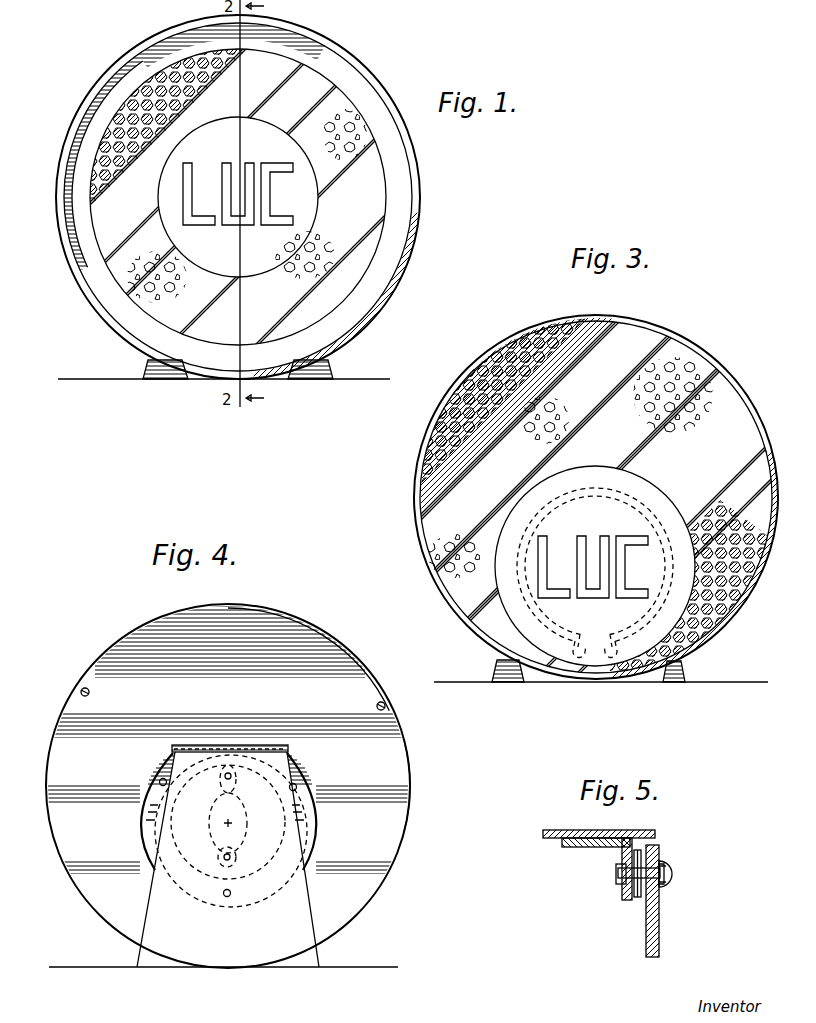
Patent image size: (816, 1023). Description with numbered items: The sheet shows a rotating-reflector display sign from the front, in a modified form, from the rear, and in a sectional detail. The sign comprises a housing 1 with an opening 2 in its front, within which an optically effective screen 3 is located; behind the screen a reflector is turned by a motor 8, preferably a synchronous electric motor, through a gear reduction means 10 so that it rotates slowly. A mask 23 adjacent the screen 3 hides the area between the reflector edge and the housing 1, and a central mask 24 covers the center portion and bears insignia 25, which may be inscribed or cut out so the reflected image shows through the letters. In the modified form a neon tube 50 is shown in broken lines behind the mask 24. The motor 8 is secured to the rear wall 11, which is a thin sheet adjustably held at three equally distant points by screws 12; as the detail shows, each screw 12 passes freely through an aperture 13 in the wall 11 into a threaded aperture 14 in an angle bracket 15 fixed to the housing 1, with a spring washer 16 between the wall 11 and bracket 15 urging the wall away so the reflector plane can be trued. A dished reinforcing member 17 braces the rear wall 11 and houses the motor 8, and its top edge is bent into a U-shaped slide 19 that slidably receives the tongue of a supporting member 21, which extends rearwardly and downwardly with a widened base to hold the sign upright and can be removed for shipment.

In FIG. 1, the housing 1 is at (421, 204).
In FIG. 3, the housing 1 is at (414, 498).
In FIG. 4, the housing 1 is at (299, 621).
In FIG. 5, the housing 1 is at (629, 830).
In FIG. 1, the opening 2 is at (350, 72).
In FIG. 3, the opening 2 is at (504, 350).
In FIG. 1, the optically effective screen 3 is at (98, 121).
In FIG. 3, the optically effective screen 3 is at (730, 402).
In FIG. 4, the motor 8 is at (243, 824).
In FIG. 4, the gear reduction means 10 is at (220, 801).
In FIG. 4, the rear wall 11 is at (396, 778).
In FIG. 5, the rear wall 11 is at (660, 946).
In FIG. 4, the screws 12 is at (80, 692).
In FIG. 5, the screws 12 is at (670, 871).
In FIG. 5, the apertures 13 is at (662, 895).
In FIG. 5, the threaded apertures 14 is at (622, 893).
In FIG. 5, the angle brackets 15 is at (584, 847).
In FIG. 5, the spring washers 16 is at (637, 900).
In FIG. 4, the reinforcing member 17 is at (148, 826).
In FIG. 4, the U-shaped slide 19 is at (290, 748).
In FIG. 1, the supporting member 21 is at (330, 366).
In FIG. 3, the supporting member 21 is at (686, 670).
In FIG. 4, the supporting member 21 is at (309, 913).
In FIG. 1, the mask 23 is at (98, 294).
In FIG. 1, the mask 24 is at (226, 269).
In FIG. 3, the mask 24 is at (597, 467).
In FIG. 1, the insignia 25 is at (242, 224).
In FIG. 3, the insignia 25 is at (594, 601).
In FIG. 3, the neon tube 50 is at (558, 682).